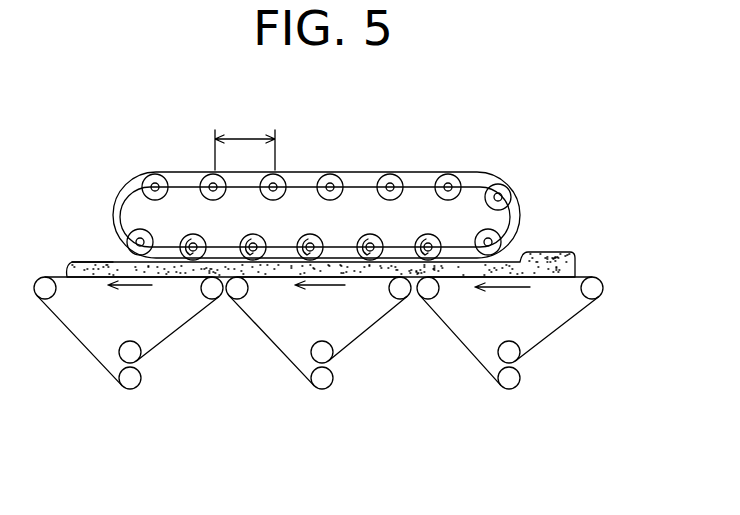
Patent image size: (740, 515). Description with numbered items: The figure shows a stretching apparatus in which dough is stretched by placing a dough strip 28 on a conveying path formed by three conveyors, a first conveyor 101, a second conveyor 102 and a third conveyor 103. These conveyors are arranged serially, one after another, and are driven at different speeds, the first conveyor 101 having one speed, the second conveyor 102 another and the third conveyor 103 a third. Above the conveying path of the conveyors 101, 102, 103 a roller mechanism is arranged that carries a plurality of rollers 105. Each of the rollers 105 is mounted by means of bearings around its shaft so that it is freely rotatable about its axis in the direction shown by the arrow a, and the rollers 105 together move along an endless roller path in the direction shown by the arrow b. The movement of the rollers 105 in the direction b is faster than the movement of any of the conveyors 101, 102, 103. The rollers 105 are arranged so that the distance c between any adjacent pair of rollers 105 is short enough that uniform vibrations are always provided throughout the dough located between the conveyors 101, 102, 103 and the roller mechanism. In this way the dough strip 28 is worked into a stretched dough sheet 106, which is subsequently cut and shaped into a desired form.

The dough strip 28 is at (567, 251).
The first conveyor 101 is at (553, 320).
The second conveyor 102 is at (363, 318).
The third conveyor 103 is at (178, 320).
The rollers 105 is at (316, 186).
The stretched dough sheet 106 is at (95, 262).
The arrow a is at (313, 246).
The arrow b is at (222, 244).
The distance c is at (245, 143).